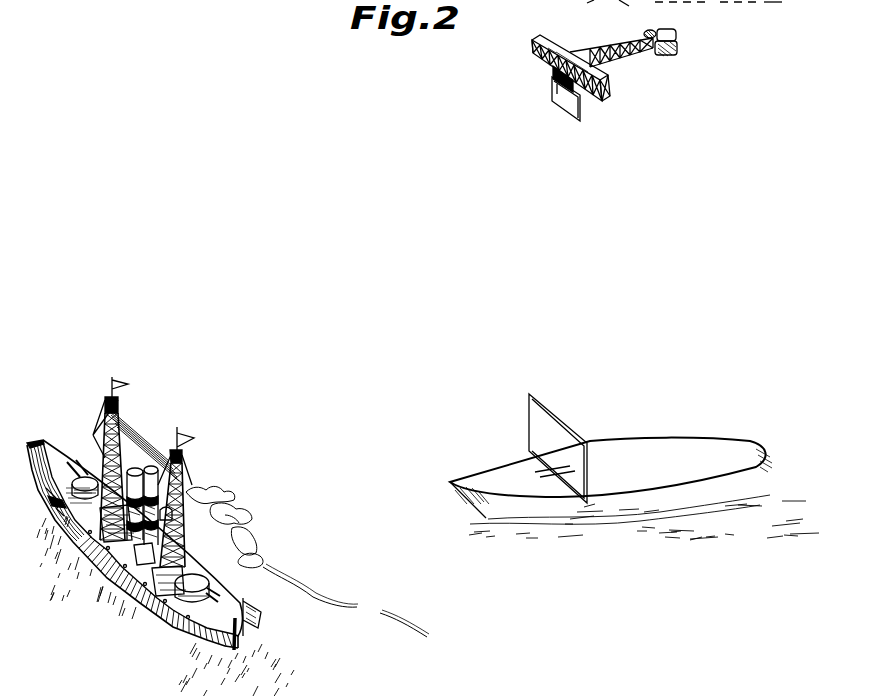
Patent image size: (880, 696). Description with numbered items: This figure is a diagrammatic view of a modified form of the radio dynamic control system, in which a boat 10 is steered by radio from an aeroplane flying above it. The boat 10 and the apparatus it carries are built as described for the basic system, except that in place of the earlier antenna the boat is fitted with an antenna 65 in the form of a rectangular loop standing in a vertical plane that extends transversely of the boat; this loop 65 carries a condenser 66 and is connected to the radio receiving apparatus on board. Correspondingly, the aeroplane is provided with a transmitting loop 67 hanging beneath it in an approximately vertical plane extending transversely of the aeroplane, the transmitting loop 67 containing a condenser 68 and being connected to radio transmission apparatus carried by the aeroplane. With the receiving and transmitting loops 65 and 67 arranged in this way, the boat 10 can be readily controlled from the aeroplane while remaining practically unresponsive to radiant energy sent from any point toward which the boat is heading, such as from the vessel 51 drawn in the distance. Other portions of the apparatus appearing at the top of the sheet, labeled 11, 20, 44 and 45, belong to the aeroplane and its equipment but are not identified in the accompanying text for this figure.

The boat 10 is at (666, 438).
The track or line 11 is at (735, 0).
The support 20 is at (772, 2).
The aircraft element 44 is at (632, 11).
The aircraft element 45 is at (583, 12).
The vessel 51 is at (228, 536).
The antenna 65 is at (554, 425).
The condenser 66 is at (536, 473).
The transmitting loop 67 is at (580, 117).
The condenser 68 is at (557, 92).